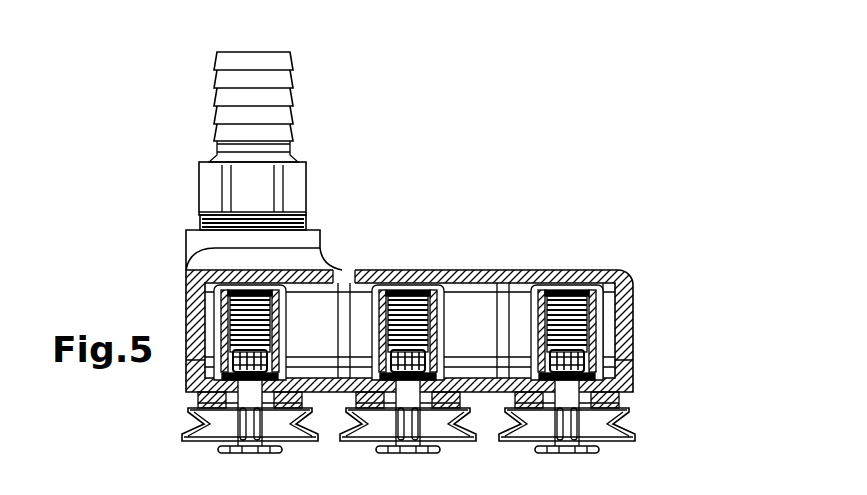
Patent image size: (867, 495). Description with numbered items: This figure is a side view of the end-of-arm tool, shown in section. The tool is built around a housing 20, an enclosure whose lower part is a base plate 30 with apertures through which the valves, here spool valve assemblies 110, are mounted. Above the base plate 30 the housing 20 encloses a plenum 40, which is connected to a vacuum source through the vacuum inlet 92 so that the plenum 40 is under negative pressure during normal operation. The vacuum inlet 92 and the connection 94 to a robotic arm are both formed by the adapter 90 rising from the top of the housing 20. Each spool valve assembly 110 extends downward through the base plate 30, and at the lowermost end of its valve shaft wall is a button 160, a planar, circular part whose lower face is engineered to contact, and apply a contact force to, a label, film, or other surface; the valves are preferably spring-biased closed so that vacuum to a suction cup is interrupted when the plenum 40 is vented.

The housing 20 is at (623, 281).
The base plate 30 is at (489, 395).
The plenum 40 is at (466, 312).
The adapter 90 is at (242, 116).
The vacuum inlet 92 is at (272, 46).
The connection 94 is at (294, 158).
The spool valve assembly 110 is at (573, 398).
The button 160 is at (633, 438).